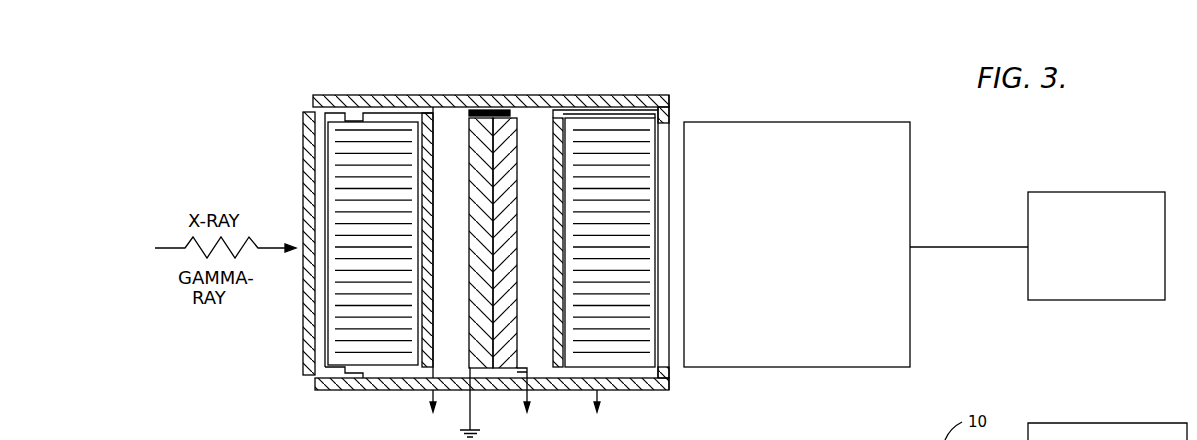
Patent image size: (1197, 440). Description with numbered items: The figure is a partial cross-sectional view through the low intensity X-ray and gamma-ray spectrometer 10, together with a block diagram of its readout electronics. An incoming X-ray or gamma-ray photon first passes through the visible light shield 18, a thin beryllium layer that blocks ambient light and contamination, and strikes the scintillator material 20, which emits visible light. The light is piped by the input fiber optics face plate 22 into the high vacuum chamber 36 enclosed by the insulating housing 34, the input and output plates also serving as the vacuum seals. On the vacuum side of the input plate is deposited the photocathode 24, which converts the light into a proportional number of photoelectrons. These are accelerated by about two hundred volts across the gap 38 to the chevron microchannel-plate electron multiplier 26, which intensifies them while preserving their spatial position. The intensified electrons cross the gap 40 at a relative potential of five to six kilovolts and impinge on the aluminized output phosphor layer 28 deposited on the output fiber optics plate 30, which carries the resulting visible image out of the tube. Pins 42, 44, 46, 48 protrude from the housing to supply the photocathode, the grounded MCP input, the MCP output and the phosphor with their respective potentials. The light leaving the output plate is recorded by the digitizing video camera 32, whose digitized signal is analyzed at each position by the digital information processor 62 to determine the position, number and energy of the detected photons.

The low intensity X-ray and gamma-ray spectrometer 10 is at (280, 58).
The visible light shield 18 is at (303, 137).
The scintillator material 20 is at (323, 150).
The input fiber optics face plate 22 is at (373, 125).
The photocathode 24 is at (433, 137).
The chevron microchannel-plate electron multiplier 26 is at (518, 137).
The aluminized output phosphor layer 28 is at (550, 118).
The output fiber optics plate 30 is at (632, 135).
The digitizing video camera 32 is at (808, 122).
The housing 34 is at (405, 96).
The high vacuum chamber 36 is at (465, 115).
The gap 38 is at (462, 314).
The gap 40 is at (545, 314).
The pin 42 is at (430, 398).
The pin 44 is at (473, 395).
The pin 46 is at (529, 395).
The pin 48 is at (599, 396).
The digital information processor 62 is at (1107, 192).